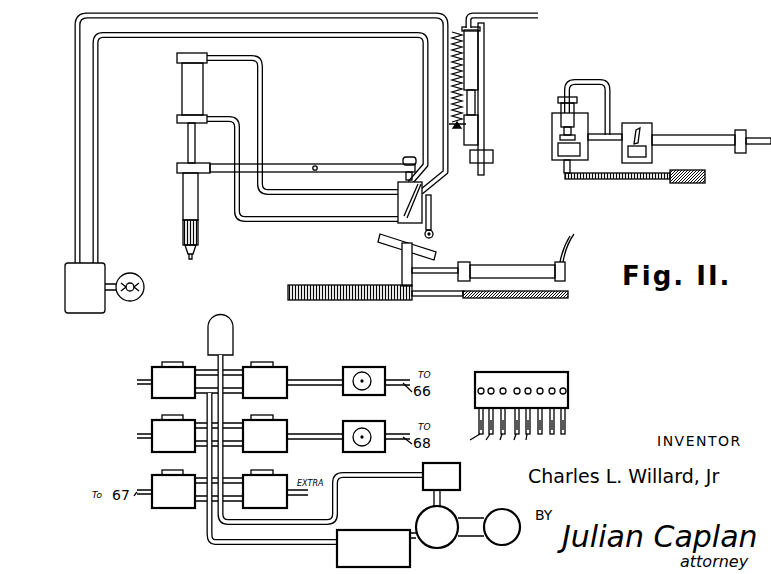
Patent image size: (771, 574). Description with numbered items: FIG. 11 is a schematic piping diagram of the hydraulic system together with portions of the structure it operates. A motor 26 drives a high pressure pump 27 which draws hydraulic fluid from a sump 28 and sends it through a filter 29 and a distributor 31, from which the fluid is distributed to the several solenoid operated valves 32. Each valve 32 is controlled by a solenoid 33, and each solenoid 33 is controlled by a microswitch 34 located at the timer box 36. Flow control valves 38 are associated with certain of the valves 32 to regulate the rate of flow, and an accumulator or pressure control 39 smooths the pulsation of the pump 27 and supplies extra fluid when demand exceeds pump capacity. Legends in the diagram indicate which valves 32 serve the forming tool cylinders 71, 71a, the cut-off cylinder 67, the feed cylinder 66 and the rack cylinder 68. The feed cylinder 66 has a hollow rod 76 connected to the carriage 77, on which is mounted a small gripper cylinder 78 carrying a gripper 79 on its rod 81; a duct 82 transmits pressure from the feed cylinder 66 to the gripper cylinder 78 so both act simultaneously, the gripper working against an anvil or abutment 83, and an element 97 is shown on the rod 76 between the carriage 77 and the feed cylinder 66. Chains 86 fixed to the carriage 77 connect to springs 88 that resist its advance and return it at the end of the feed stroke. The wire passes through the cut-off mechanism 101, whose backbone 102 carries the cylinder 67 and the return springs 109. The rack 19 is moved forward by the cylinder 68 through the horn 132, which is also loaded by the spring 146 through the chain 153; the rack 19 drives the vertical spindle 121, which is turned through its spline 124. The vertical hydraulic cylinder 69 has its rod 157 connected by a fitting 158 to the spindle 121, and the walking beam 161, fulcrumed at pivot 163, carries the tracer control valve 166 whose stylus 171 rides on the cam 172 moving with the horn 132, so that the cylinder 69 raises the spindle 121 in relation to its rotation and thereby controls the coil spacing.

The rack 19 is at (362, 299).
The motor 26 is at (511, 541).
The high pressure pump 27 is at (446, 541).
The sump 28 is at (337, 560).
The filter 29 is at (460, 477).
The distributor 31 is at (337, 495).
The valve 32 is at (281, 437).
The solenoid 33 is at (162, 364).
The microswitch 34 is at (503, 388).
The timer box 36 is at (527, 399).
The flow control valve 38 is at (375, 368).
The accumulator or pressure control 39 is at (225, 338).
The feed cylinder 66 is at (718, 146).
The cylinder 67 is at (470, 72).
The cylinder 68 is at (506, 265).
The vertical hydraulic cylinder 69 is at (188, 83).
The cylinder 71 is at (137, 382).
The cylinder 71a is at (137, 436).
The rod 76 is at (608, 145).
The carriage 77 is at (556, 161).
The gripper cylinder 78 is at (563, 110).
The gripper 79 is at (565, 138).
The rod 81 is at (565, 131).
The duct 82 is at (608, 92).
The anvil or abutment 83 is at (580, 157).
The chains 86 is at (658, 180).
The springs 88 is at (690, 184).
The valve box 97 is at (637, 130).
The cut-off mechanism 101 is at (485, 108).
The vertical plate or backbone 102 is at (484, 146).
The springs 109 is at (465, 57).
The vertical spindle 121 is at (184, 210).
The spline 124 is at (199, 232).
The horn 132 is at (402, 270).
The spring 146 is at (520, 298).
The chain 153 is at (440, 298).
The rod 157 is at (188, 140).
The fitting 158 is at (179, 167).
The walking beam 161 is at (277, 162).
The pivot 163 is at (318, 165).
The tracer control valve 166 is at (397, 202).
The stylus 171 is at (433, 226).
The cam 172 is at (382, 246).